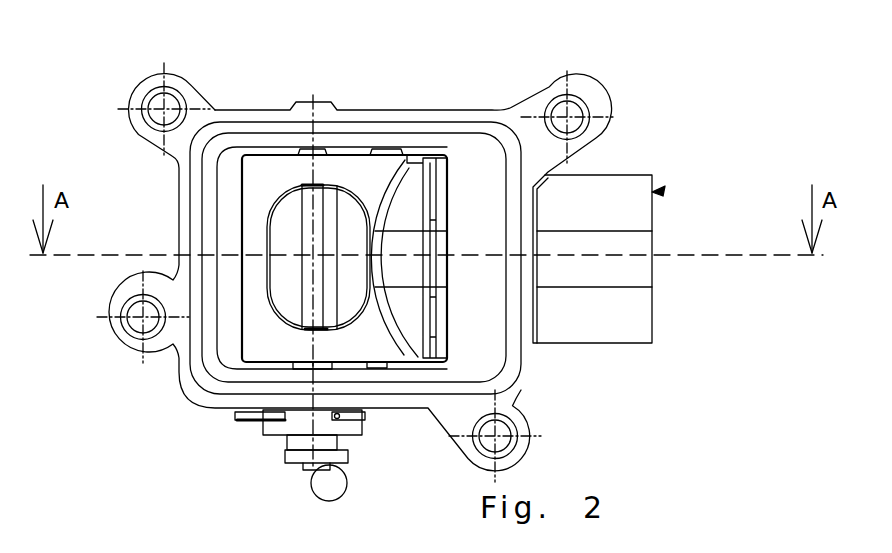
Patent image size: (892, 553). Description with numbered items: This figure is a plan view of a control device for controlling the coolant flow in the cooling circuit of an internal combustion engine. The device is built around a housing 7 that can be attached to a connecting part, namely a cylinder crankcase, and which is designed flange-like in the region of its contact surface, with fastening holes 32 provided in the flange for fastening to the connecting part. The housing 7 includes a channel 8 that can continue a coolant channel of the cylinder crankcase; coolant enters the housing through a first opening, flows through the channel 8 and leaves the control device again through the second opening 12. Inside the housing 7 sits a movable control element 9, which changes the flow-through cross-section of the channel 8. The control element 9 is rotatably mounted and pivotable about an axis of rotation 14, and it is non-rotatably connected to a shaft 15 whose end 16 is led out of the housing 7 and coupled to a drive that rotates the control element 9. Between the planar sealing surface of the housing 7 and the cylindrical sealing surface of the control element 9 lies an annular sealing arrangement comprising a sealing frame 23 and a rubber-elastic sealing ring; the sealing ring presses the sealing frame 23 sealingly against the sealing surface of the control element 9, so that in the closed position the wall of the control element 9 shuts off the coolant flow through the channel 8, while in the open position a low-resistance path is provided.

The housing 7 is at (606, 185).
The channel 8 is at (230, 230).
The control element 9 is at (252, 208).
The second opening 12 is at (662, 188).
The axis of rotation 14 is at (316, 173).
The shaft 15 is at (303, 205).
The end 16 is at (290, 457).
The sealing frame 23 is at (404, 174).
The fastening holes 32 is at (577, 108).